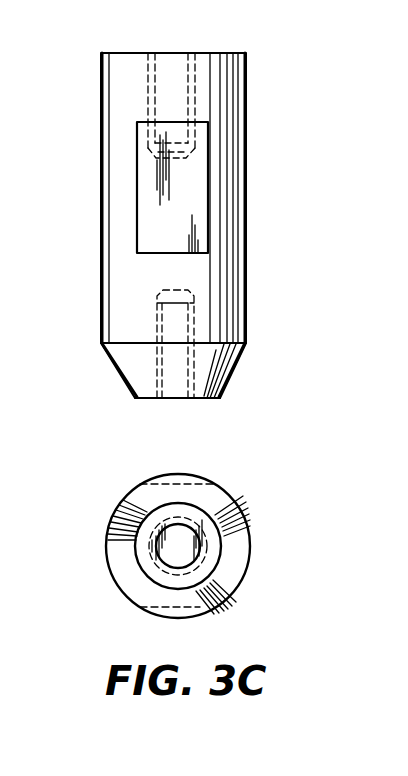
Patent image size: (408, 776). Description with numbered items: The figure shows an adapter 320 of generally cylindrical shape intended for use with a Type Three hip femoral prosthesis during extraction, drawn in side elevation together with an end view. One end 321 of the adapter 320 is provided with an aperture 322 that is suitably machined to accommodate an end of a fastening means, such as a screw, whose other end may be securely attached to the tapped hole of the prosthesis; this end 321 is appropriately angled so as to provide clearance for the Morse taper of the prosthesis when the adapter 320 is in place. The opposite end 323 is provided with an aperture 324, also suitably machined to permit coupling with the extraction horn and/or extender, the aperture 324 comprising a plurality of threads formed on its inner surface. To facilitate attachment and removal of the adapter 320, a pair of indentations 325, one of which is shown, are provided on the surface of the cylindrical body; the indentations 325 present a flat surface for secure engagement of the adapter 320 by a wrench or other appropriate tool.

The adapter 320 is at (94, 138).
The end 321 is at (207, 396).
The aperture 322 is at (170, 385).
The opposite end 323 is at (228, 52).
The aperture 324 is at (165, 58).
The indentations 325 is at (190, 188).